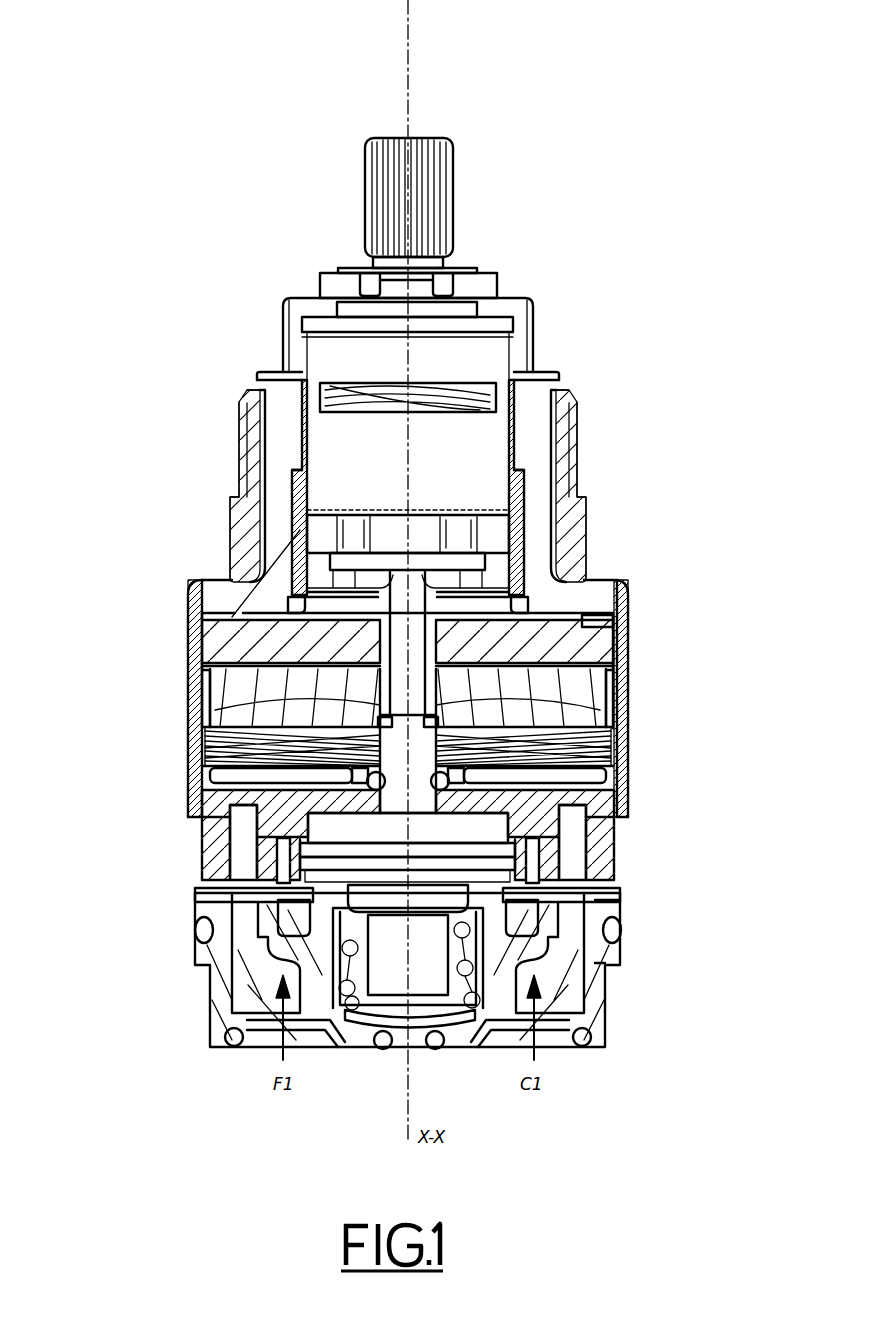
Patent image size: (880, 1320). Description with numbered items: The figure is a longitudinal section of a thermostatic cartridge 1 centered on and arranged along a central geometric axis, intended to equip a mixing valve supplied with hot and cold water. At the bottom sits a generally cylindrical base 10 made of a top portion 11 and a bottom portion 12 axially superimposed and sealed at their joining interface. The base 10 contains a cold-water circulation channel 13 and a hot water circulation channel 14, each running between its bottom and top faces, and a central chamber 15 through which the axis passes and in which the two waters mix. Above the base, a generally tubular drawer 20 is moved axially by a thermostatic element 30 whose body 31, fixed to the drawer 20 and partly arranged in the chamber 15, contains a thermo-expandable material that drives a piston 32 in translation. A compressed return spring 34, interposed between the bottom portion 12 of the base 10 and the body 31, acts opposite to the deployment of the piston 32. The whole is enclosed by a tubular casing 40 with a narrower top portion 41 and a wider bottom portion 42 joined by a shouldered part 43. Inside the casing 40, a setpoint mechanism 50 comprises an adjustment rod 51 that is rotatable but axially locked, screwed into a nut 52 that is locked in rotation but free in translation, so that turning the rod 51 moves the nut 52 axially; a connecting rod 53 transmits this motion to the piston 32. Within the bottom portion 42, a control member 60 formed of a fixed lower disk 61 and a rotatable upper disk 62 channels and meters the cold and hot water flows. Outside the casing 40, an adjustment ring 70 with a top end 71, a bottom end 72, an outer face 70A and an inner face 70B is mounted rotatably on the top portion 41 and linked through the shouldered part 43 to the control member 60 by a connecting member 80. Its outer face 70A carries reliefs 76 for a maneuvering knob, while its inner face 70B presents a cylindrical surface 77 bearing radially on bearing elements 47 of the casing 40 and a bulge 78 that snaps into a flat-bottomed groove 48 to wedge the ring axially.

The thermostatic cartridge 1 is at (240, 268).
The base 10 is at (100, 892).
The top portion 11 is at (408, 48).
The bottom portion 12 is at (200, 935).
The cold-water circulation channel 13 is at (245, 995).
The hot water circulation channel 14 is at (575, 940).
The chamber 15 is at (500, 900).
The drawer 20 is at (235, 838).
The thermostatic element 30 is at (378, 742).
The body 31 is at (392, 978).
The piston 32 is at (385, 745).
The return spring 34 is at (470, 1000).
The casing 40 is at (180, 607).
The top portion 41 is at (262, 485).
The bottom portion 42 is at (210, 700).
The shouldered part 43 is at (240, 582).
The bearing elements 47 is at (470, 440).
The groove 48 is at (525, 545).
The setpoint mechanism 50 is at (686, 300).
The adjustment rod 51 is at (427, 263).
The nut 52 is at (455, 410).
The connecting rod 53 is at (470, 440).
The control member 60 is at (718, 655).
The lower disk 61 is at (605, 740).
The upper disk 62 is at (570, 695).
The adjustment ring 70 is at (230, 522).
The outer face 70A is at (240, 403).
The inner face 70B is at (285, 445).
The top end 71 is at (258, 390).
The bottom end 72 is at (557, 613).
The reliefs 76 is at (566, 458).
The cylindrical surface 77 is at (300, 460).
The bulge 78 is at (515, 572).
The connecting member 80 is at (617, 632).